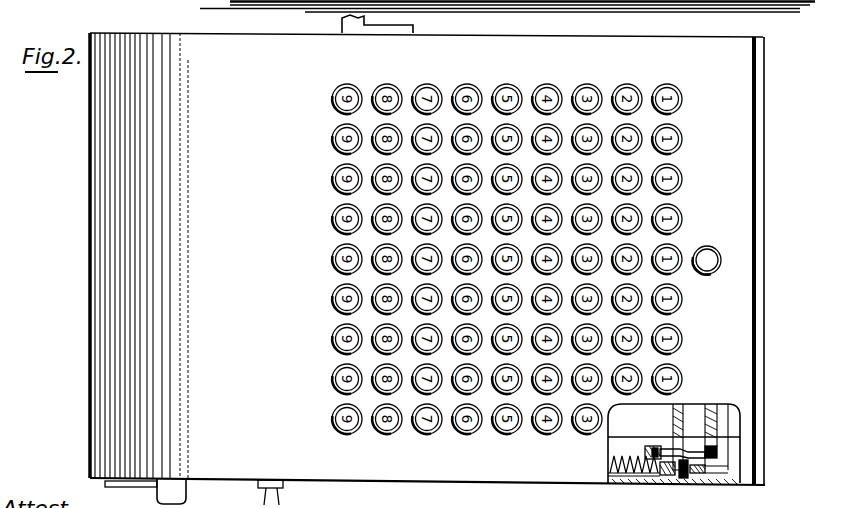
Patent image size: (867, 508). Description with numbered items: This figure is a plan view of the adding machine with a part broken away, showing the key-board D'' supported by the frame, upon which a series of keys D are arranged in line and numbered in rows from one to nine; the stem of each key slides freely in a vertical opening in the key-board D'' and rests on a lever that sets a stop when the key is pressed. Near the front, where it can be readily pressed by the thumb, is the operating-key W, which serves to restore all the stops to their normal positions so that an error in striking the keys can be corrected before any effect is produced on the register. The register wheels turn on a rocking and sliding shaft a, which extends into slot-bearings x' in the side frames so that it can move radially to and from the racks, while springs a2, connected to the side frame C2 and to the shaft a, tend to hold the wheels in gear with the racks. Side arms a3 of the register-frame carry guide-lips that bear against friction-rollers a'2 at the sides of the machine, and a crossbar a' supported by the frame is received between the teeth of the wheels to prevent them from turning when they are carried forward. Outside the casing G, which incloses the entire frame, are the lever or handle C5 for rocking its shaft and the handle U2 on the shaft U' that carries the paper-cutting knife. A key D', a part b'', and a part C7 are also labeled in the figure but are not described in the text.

The lever or handle C5 is at (370, 35).
The key-board D'' is at (663, 88).
The key D is at (677, 138).
The key D' is at (334, 226).
The operating-key W is at (708, 250).
The rocking and sliding shaft a is at (674, 444).
The spring a2 is at (622, 461).
The stop block b'' is at (649, 436).
The friction-roller a'2 is at (750, 448).
The side arm of the register-frame a3 is at (694, 450).
The crossbar a' is at (718, 424).
The side frame C2 is at (661, 472).
The slot-bearing x' is at (692, 484).
The shaft U' is at (131, 494).
The handle U2 is at (189, 487).
The bracket foot C7 is at (281, 488).
The casing G is at (491, 478).